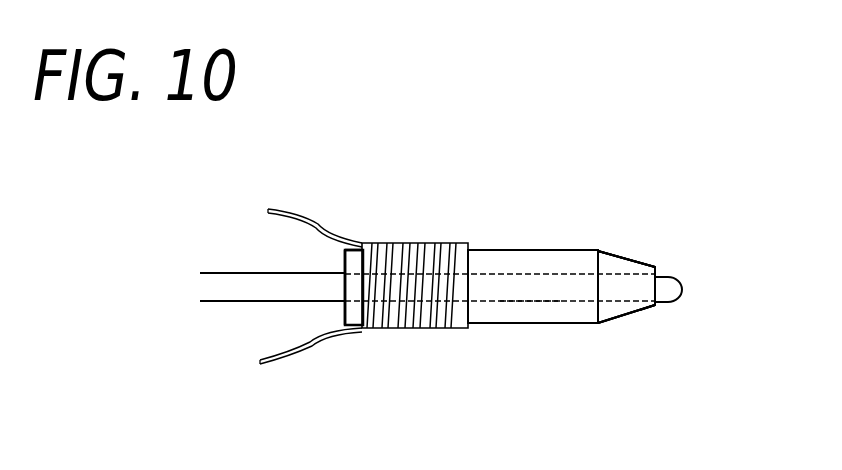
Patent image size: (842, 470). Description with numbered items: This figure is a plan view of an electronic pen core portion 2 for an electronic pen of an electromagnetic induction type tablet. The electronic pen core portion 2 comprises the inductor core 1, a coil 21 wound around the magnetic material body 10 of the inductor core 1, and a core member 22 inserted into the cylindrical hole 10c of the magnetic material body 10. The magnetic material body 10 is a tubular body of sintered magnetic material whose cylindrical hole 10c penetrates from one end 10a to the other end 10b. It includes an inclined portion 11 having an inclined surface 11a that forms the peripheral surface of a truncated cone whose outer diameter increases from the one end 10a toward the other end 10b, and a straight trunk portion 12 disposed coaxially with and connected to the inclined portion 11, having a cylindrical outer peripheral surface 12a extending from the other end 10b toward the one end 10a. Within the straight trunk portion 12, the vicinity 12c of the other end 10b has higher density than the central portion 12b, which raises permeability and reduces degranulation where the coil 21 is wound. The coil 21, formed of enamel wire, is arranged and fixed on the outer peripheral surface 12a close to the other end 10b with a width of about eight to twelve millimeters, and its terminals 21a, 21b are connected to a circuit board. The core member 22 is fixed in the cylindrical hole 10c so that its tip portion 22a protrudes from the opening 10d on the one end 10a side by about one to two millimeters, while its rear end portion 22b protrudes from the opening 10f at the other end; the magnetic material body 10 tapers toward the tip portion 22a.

The inductor core 1 is at (550, 327).
The electronic pen core portion 2 is at (693, 128).
The magnetic material body 10 is at (508, 318).
The one end 10a is at (672, 278).
The other end 10b is at (345, 270).
The cylindrical hole 10c is at (537, 300).
The opening on the one end side 10d is at (657, 303).
The opening on the other end 10f is at (337, 322).
The inclined portion 11 is at (633, 318).
The inclined surface 11a is at (633, 255).
The straight trunk portion 12 is at (477, 325).
The outer peripheral surface 12a is at (488, 250).
The central portion of the straight trunk portion 12b is at (557, 250).
The vicinity of the other end of the straight trunk portion 12c is at (352, 250).
The coil 21 is at (418, 242).
The terminal of the coil 21a is at (308, 213).
The terminal of the coil 21b is at (300, 358).
The core member 22 is at (258, 292).
The tip portion 22a is at (687, 300).
The rear end portion 22b is at (232, 273).